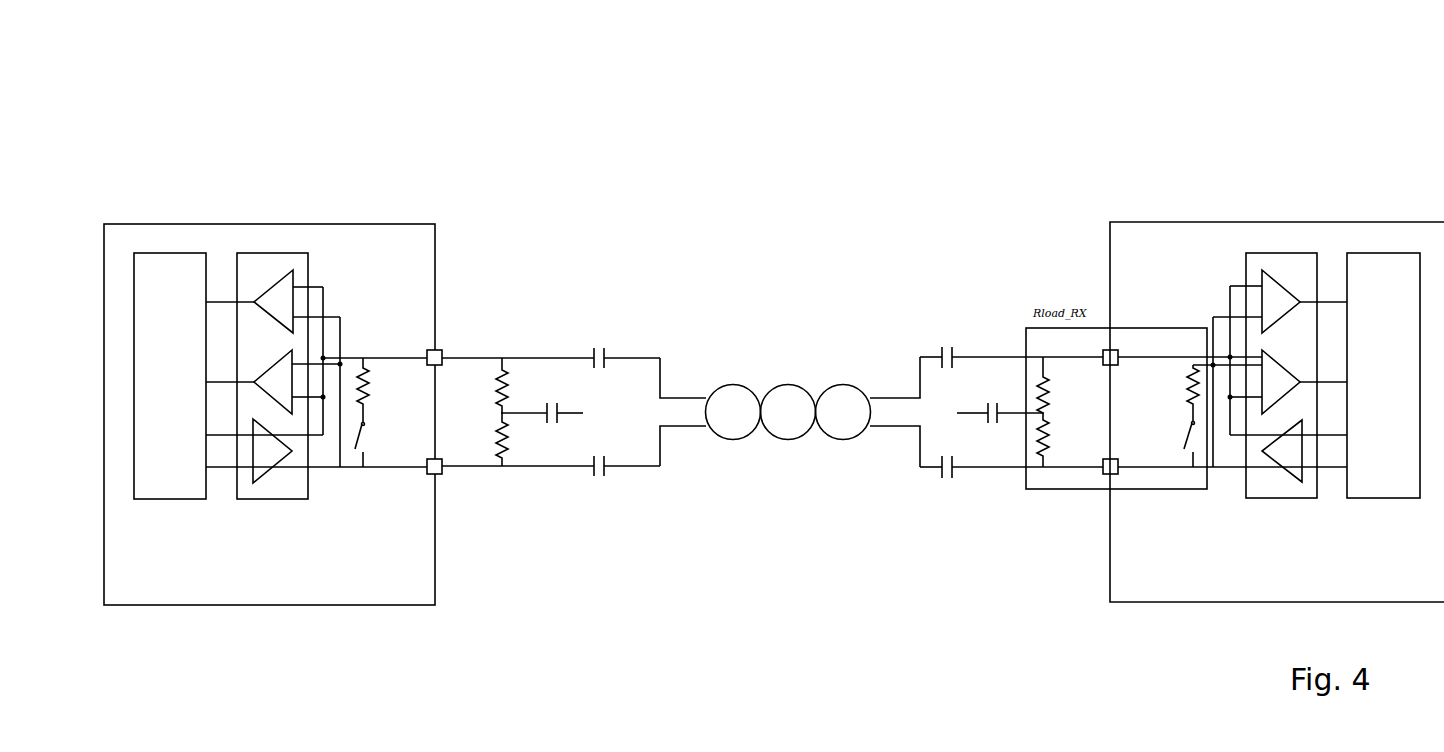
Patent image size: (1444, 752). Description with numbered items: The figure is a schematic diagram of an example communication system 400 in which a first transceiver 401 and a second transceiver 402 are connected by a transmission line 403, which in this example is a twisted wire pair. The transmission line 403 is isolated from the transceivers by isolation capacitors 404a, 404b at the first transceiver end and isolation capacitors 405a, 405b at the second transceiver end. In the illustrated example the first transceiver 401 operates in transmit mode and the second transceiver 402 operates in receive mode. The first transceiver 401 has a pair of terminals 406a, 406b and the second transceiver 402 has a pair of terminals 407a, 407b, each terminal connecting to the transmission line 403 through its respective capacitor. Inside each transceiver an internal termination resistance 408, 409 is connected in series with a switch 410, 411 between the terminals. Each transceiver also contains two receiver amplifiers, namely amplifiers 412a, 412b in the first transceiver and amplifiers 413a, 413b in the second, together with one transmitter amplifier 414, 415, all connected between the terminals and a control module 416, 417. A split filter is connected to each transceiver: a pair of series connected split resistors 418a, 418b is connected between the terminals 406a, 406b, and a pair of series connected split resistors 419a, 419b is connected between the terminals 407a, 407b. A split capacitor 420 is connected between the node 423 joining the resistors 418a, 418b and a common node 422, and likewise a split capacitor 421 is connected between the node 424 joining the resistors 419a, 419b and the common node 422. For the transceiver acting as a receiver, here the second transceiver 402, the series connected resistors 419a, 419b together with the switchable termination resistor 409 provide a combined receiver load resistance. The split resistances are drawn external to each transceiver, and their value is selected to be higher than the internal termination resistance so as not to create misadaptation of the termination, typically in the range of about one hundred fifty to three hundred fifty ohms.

The communication system 400 is at (150, 100).
The first transceiver 401 is at (172, 223).
The second transceiver 402 is at (1353, 222).
The transmission line 403 is at (833, 388).
The isolation capacitor 404a is at (637, 344).
The isolation capacitor 404b is at (638, 482).
The isolation capacitor 405a is at (911, 337).
The isolation capacitor 405b is at (910, 482).
The terminal 406a is at (462, 333).
The terminal 406b is at (463, 500).
The terminal 407a is at (1105, 349).
The terminal 407b is at (1108, 477).
The internal termination resistance 408 is at (393, 390).
The internal termination resistance 409 is at (1187, 392).
The switch 410 is at (368, 440).
The switch 411 is at (1183, 437).
The receiver amplifier 412a is at (293, 289).
The receiver amplifier 412b is at (303, 365).
The receiver amplifier 413a is at (1257, 287).
The receiver amplifier 413b is at (1245, 349).
The transmitter amplifier 414 is at (316, 464).
The transmitter amplifier 415 is at (1232, 467).
The control module 416 is at (190, 393).
The control module 417 is at (1404, 390).
The series connected resistor 418a is at (512, 369).
The series connected resistor 418b is at (512, 456).
The series connected resistor 419a is at (1022, 358).
The series connected resistor 419b is at (1029, 466).
The capacitor 420 is at (558, 420).
The capacitor 421 is at (983, 419).
The common node 422 is at (588, 411).
The node 423 is at (743, 338).
The node 424 is at (1075, 406).